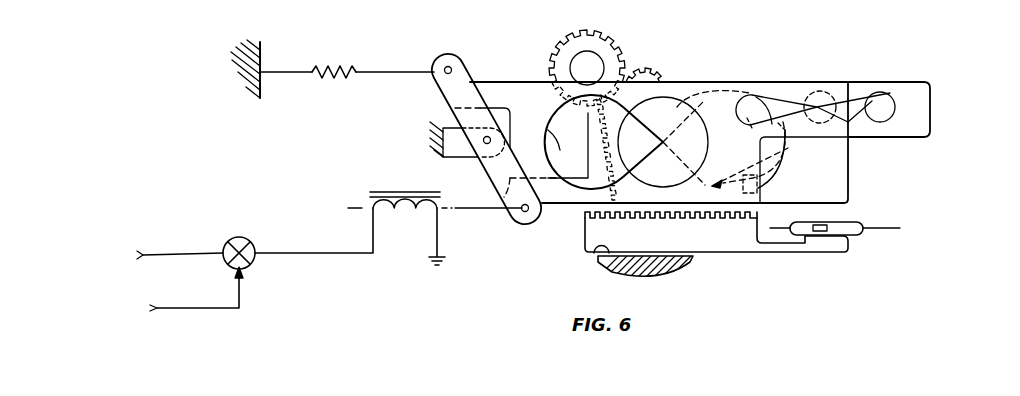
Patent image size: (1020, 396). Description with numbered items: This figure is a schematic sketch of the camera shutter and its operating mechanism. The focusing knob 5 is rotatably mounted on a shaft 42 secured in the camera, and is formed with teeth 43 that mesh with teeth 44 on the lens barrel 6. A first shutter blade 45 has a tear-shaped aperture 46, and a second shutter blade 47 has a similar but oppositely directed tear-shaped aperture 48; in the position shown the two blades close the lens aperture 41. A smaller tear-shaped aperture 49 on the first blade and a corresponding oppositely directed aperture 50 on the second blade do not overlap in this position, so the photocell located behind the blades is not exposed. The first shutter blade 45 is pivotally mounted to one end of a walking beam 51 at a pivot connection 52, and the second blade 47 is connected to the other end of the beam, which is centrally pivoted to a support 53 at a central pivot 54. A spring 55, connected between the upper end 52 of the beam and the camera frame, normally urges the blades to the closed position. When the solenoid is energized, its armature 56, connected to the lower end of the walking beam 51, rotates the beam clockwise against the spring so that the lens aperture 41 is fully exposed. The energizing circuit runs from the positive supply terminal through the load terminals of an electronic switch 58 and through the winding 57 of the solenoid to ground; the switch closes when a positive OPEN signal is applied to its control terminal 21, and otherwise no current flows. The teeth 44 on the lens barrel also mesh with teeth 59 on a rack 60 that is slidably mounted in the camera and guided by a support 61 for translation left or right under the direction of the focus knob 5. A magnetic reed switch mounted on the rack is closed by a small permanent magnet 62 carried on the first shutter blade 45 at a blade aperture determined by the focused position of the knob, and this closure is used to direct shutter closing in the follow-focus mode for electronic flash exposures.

The focusing knob 5 is at (611, 51).
The lens barrel 6 is at (663, 79).
The control terminal 21 is at (193, 312).
The lens aperture 41 is at (678, 103).
The shaft 42 is at (560, 50).
The teeth 43 is at (589, 36).
The teeth 44 is at (643, 70).
The first shutter blade 45 is at (501, 87).
The tear-shaped aperture 46 is at (604, 147).
The second shutter blade 47 is at (845, 183).
The tear-shaped aperture 48 is at (787, 157).
The smaller tear-shaped aperture 49 is at (775, 99).
The tear-shaped aperture 50 is at (873, 93).
The walking beam 51 is at (452, 107).
The pivot connection 52 is at (456, 64).
The support 53 is at (458, 158).
The central pivot 54 is at (491, 139).
The spring 55 is at (348, 66).
The armature 56 is at (483, 212).
The winding 57 is at (374, 207).
The electronic switch 58 is at (254, 245).
The teeth 59 is at (752, 215).
The rack 60 is at (705, 241).
The support 61 is at (597, 257).
The permanent magnet 62 is at (758, 186).